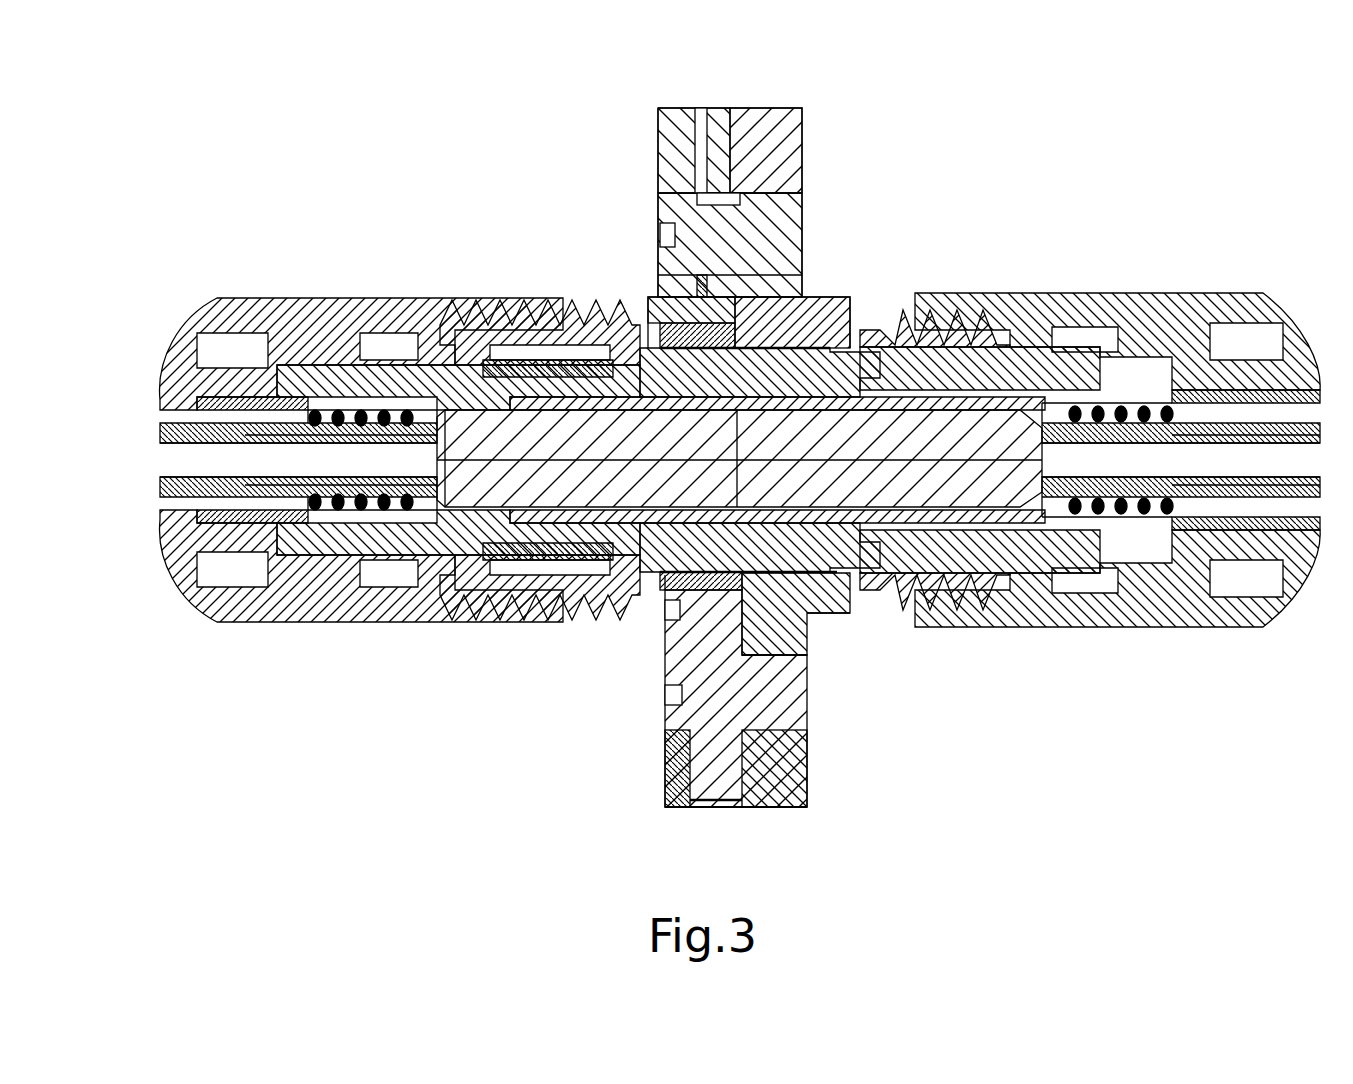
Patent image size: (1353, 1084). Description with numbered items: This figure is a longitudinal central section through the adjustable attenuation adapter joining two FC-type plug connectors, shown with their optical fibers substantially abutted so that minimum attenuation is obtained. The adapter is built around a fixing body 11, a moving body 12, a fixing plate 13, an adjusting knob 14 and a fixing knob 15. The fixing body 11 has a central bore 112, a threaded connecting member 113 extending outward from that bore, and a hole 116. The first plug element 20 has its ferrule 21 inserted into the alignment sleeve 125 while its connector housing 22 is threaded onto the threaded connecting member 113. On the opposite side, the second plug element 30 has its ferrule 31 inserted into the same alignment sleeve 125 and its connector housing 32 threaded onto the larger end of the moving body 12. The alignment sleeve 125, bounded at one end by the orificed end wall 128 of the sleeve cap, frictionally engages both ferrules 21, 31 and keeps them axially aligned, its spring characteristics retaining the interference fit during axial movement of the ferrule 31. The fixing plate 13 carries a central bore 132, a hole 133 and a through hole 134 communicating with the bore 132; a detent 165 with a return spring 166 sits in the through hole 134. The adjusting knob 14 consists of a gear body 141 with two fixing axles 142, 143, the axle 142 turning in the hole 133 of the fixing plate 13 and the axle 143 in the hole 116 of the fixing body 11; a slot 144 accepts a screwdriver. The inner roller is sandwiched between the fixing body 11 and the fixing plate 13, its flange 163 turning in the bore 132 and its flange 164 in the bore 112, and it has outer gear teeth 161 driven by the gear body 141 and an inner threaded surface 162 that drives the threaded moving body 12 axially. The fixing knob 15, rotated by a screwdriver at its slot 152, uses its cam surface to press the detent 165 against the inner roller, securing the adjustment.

The fixing body 11 is at (790, 116).
The moving body 12 is at (800, 367).
The fixing plate 13 is at (648, 300).
The adjusting knob 14 is at (723, 758).
The fixing knob 15 is at (800, 225).
The first plug element 20 is at (1103, 310).
The ferrule 21 is at (868, 540).
The connector housing 22 is at (965, 305).
The second plug element 30 is at (318, 315).
The ferrule 31 is at (617, 533).
The connector housing 32 is at (470, 315).
The bore 112 is at (800, 620).
The threaded connecting member 113 is at (902, 317).
The hole 116 is at (807, 805).
The alignment sleeve 125 is at (568, 403).
The orificed end wall 128 is at (518, 395).
The bore 132 is at (657, 572).
The hole 133 is at (690, 803).
The through hole 134 is at (698, 120).
The gear body 141 is at (702, 808).
The fixing axle 142 is at (685, 728).
The fixing axle 143 is at (767, 707).
The slot 144 is at (683, 698).
The slot 152 is at (667, 237).
The gear teeth 161 is at (790, 640).
The inner threaded surface 162 is at (633, 328).
The flange 163 is at (672, 600).
The flange 164 is at (757, 545).
The detent 165 is at (723, 275).
The return spring 166 is at (792, 268).